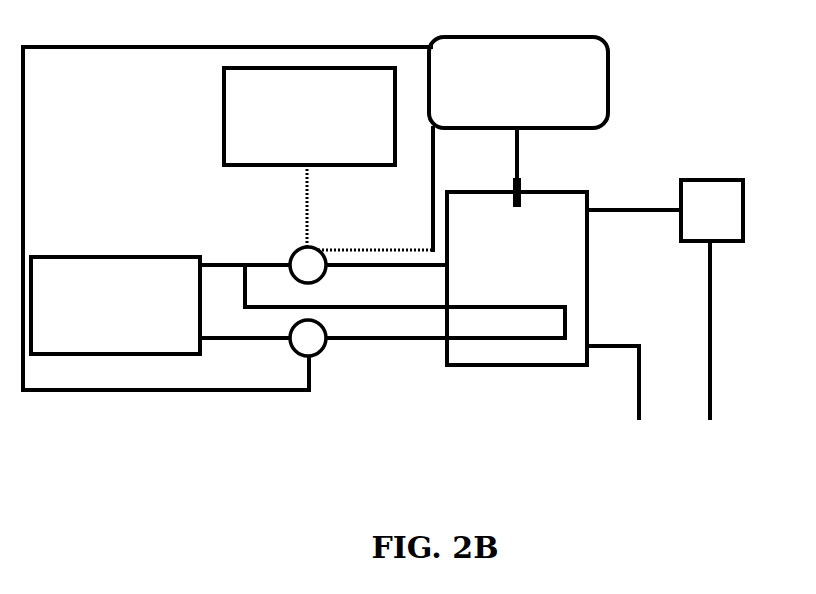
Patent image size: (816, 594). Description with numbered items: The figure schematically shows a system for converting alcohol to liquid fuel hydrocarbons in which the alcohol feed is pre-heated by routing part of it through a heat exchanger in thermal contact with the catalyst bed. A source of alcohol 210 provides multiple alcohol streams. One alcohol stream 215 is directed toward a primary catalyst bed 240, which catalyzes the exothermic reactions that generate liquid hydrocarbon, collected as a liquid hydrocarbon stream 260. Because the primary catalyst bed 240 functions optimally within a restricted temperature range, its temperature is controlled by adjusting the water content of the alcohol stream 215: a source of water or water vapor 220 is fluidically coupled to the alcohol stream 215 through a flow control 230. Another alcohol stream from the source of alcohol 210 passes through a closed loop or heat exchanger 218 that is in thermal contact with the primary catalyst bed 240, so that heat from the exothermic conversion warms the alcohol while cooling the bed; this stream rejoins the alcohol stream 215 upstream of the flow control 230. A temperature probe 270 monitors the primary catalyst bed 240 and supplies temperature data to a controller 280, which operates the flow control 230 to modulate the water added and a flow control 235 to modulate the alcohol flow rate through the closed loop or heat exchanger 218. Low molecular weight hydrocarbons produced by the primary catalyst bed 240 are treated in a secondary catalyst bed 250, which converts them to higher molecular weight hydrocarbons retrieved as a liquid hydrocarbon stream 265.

The source of alcohol 210 is at (95, 321).
The alcohol stream 215 is at (212, 263).
The closed loop or heat exchanger 218 is at (377, 343).
The source of water or water vapor 220 is at (290, 124).
The flow control 230 is at (292, 250).
The flow control 235 is at (312, 355).
The primary catalyst bed 240 is at (497, 266).
The secondary catalyst bed 250 is at (733, 177).
The liquid hydrocarbon stream 260 is at (635, 375).
The liquid hydrocarbon stream 265 is at (712, 377).
The temperature probe 270 is at (520, 177).
The controller 280 is at (502, 93).